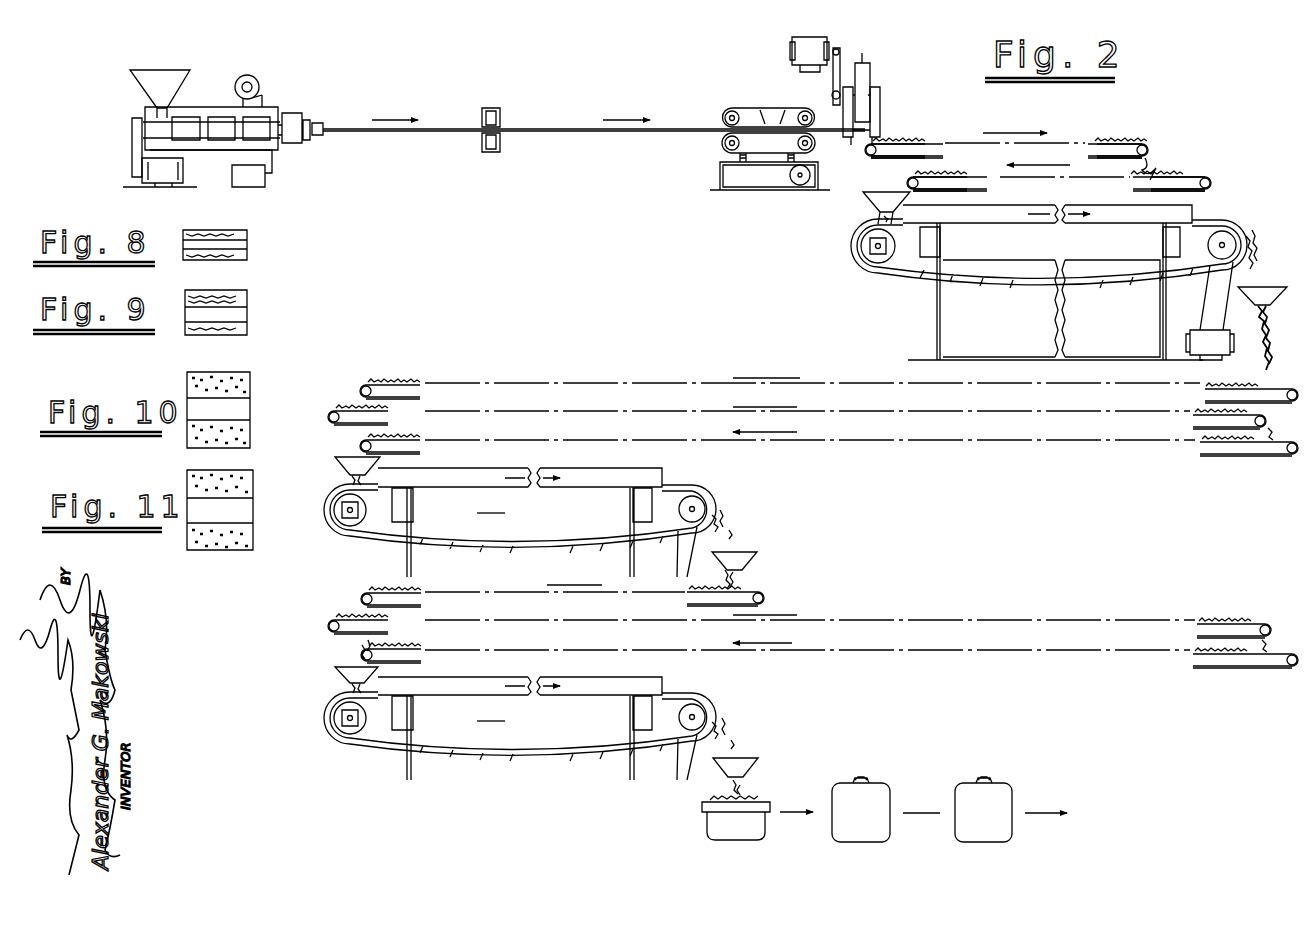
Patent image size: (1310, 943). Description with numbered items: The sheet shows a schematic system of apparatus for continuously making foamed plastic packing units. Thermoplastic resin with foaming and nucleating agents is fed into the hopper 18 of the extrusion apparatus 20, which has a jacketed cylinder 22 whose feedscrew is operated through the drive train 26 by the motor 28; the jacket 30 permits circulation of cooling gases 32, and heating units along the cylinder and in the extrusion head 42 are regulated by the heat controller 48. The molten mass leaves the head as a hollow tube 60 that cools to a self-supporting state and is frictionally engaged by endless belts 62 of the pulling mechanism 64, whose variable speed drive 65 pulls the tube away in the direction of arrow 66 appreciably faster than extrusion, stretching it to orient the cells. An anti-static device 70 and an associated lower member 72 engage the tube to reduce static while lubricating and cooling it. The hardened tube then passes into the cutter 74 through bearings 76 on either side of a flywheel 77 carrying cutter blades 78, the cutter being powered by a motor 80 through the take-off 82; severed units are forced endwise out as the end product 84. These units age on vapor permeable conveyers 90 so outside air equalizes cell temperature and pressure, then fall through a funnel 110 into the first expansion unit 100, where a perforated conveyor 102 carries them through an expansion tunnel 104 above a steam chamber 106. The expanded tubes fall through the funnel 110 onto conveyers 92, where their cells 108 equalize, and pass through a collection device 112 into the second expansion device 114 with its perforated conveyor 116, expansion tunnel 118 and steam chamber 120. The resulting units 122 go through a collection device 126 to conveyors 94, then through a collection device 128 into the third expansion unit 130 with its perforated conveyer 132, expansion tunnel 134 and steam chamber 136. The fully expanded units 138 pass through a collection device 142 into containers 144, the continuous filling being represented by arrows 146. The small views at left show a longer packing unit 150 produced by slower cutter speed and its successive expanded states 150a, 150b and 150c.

In FIG. 2, the hopper 18 is at (180, 90).
In FIG. 2, the extrusion apparatus 20 is at (220, 134).
In FIG. 2, the jacketed cylinder 22 is at (205, 117).
In FIG. 2, the drive train 26 is at (132, 150).
In FIG. 2, the motor 28 is at (165, 183).
In FIG. 2, the jacket 30 is at (256, 80).
In FIG. 2, the cooling gases 32 is at (222, 152).
In FIG. 2, the extrusion head 42 is at (318, 123).
In FIG. 2, the heat controller 48 is at (255, 187).
In FIG. 2, the elongate tube 60 is at (560, 128).
In FIG. 2, the endless belts 62 is at (722, 112).
In FIG. 2, the pulling mechanism 64 is at (759, 122).
In FIG. 2, the variable speed drive 65 is at (790, 178).
In FIG. 2, the pulling direction arrow 66 is at (614, 120).
In FIG. 2, the anti-static device 70 is at (490, 108).
In FIG. 2, the lower guide 72 is at (490, 152).
In FIG. 2, the cutter 74 is at (864, 90).
In FIG. 2, the hollow bushings or bearings 76 is at (872, 143).
In FIG. 2, the flywheel 77 is at (872, 75).
In FIG. 2, the cutter blades 78 is at (862, 53).
In FIG. 2, the motor 80 is at (815, 40).
In FIG. 2, the take-off 82 is at (833, 85).
In FIG. 2, the severed units end product 84 is at (885, 142).
In FIG. 2, the vapor permeable conveyers 90 is at (1152, 160).
In FIG. 2, the conveyers 92 is at (1270, 458).
In FIG. 2, the conveyors 94 is at (357, 604).
In FIG. 2, the first expansion unit 100 is at (1059, 278).
In FIG. 2, the endless perforated conveyor 102 is at (872, 270).
In FIG. 2, the expansion tunnel 104 is at (1112, 212).
In FIG. 2, the steam chamber 106 is at (1022, 250).
In FIG. 2, the cells 108 is at (1256, 258).
In FIG. 2, the funnel 110 is at (870, 198).
In FIG. 2, the collection device 112 is at (343, 463).
In FIG. 2, the second expansion device 114 is at (509, 516).
In FIG. 2, the perforated conveyor 116 is at (500, 549).
In FIG. 2, the expansion tunnel 118 is at (660, 475).
In FIG. 2, the steam chamber 120 is at (492, 505).
In FIG. 2, the second-stage expanded unit 122 is at (733, 536).
In FIG. 2, the collection device 126 is at (755, 563).
In FIG. 2, the collection device 128 is at (343, 673).
In FIG. 2, the third expansion unit 130 is at (509, 727).
In FIG. 2, the perforated endless conveyer 132 is at (490, 759).
In FIG. 2, the expansion tunnel 134 is at (640, 678).
In FIG. 2, the steam chamber 136 is at (492, 713).
In FIG. 2, the fully expanded unit 138 is at (735, 735).
In FIG. 2, the collection device 142 is at (755, 770).
In FIG. 2, the containers 144 is at (703, 831).
In FIG. 2, the filling arrows 146 is at (920, 812).
In FIG. 8, the packing unit 150 is at (247, 250).
In FIG. 9, the first-stage expanded packing unit 150a is at (220, 322).
In FIG. 10, the second-stage expanded packing unit 150b is at (250, 396).
In FIG. 11, the third-stage expanded packing unit 150c is at (253, 488).